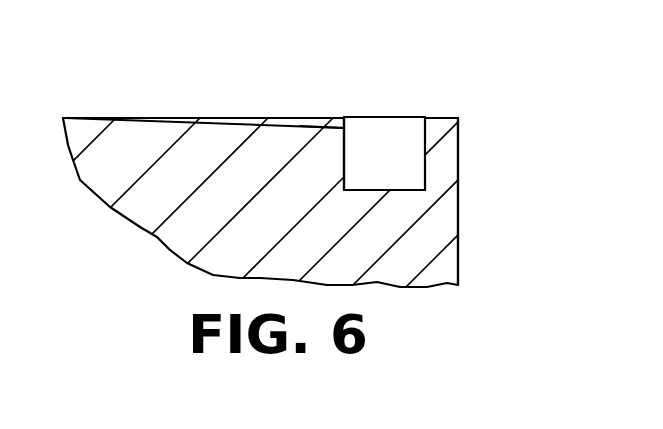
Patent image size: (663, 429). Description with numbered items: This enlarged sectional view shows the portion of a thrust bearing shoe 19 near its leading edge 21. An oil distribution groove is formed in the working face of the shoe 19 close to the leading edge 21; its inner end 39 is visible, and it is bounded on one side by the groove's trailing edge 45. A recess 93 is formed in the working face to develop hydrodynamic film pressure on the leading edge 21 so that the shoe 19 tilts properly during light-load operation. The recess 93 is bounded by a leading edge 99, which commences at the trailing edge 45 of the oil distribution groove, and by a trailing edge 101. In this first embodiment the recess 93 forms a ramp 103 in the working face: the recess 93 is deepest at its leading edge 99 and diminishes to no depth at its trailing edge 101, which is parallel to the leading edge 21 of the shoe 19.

The shoe 19 is at (210, 170).
The leading edge 21 is at (440, 125).
The inner end 39 is at (392, 165).
The trailing edge 45 is at (349, 150).
The recess 93 is at (312, 122).
The leading edge 99 is at (345, 119).
The trailing edge 101 is at (163, 117).
The ramp 103 is at (273, 124).